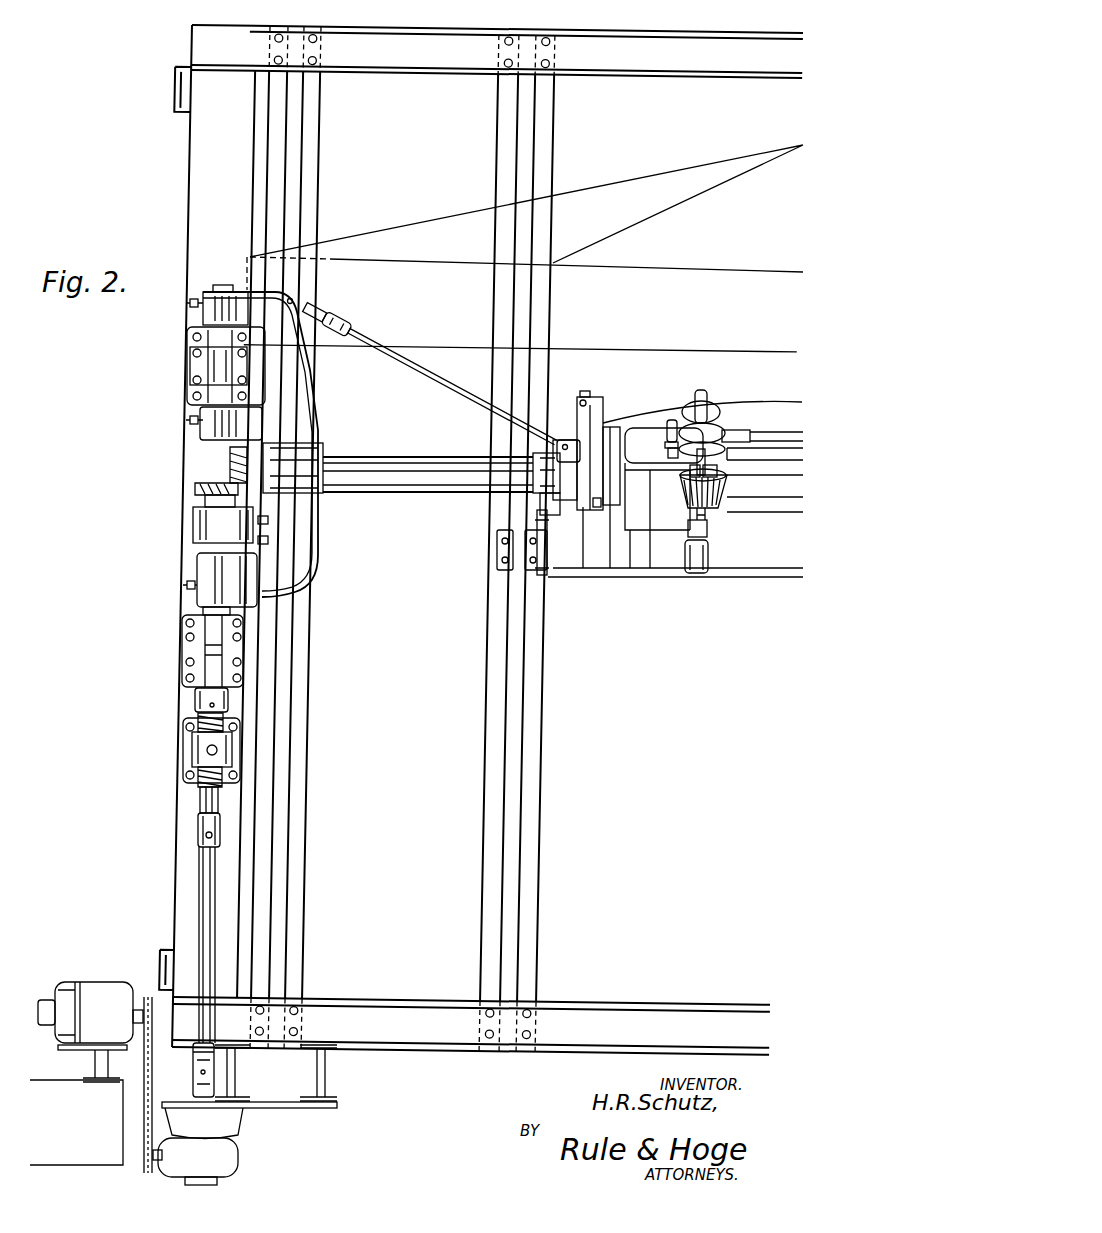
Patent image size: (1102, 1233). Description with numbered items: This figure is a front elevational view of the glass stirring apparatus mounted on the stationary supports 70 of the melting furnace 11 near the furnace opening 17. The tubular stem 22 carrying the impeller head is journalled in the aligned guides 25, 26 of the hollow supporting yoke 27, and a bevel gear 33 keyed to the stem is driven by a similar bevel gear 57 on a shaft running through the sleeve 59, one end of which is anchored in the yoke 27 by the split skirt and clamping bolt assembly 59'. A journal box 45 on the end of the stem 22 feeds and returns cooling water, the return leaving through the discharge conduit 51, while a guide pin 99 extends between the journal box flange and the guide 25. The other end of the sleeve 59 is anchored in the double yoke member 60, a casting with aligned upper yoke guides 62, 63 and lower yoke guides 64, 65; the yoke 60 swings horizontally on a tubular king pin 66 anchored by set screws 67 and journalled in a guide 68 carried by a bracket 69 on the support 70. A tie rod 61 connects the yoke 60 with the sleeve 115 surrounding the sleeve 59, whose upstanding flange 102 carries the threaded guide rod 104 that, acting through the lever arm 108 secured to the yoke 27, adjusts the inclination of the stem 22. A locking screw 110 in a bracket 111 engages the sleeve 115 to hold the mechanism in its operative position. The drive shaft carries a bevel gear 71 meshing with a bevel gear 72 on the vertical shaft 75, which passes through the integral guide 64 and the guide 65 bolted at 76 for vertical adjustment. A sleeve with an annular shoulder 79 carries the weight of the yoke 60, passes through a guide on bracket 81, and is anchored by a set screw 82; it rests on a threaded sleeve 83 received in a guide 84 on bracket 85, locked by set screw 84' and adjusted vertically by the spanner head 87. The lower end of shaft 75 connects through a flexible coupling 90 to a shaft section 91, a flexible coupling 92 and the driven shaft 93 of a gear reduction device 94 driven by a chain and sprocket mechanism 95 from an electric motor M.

The melting tank or furnace 11 is at (627, 818).
The furnace opening 17 is at (750, 575).
The tubular stem 22 is at (710, 553).
The guide 25 is at (722, 472).
The guide 26 is at (708, 528).
The hollow supporting yoke 27 is at (640, 430).
The bevel gear 33 is at (728, 486).
The journal box 45 is at (712, 418).
The discharge conduit 51 is at (742, 431).
The bevel gear 57 is at (680, 490).
The sleeve or carrier 59 is at (421, 462).
The split skirt and clamping bolt assembly 59' is at (579, 523).
The double yoke member 60 is at (305, 410).
The tie rod 61 is at (422, 368).
The upper yoke guide 62 is at (212, 287).
The upper yoke guide 63 is at (205, 435).
The lower yoke guide 64 is at (200, 562).
The lower yoke guide 65 is at (195, 519).
The king pin 66 is at (189, 330).
The set screws 67 is at (189, 303).
The guide 68 is at (222, 366).
The bracket or support 69 is at (192, 388).
The stationary supports 70 is at (190, 233).
The bevel gear 71 is at (230, 462).
The bevel gear 72 is at (195, 486).
The shaft 75 is at (200, 798).
The bolts 76 is at (268, 540).
The annular shoulder 79 is at (210, 612).
The bracket 81 is at (185, 625).
The set screw 82 is at (186, 585).
The sleeve 83 is at (196, 719).
The guide 84 is at (188, 750).
The set screw 84' is at (183, 749).
The bracket 85 is at (190, 766).
The spanner head 87 is at (200, 700).
The flexible coupling 90 is at (196, 833).
The shaft section 91 is at (198, 898).
The flexible coupling 92 is at (215, 1077).
The driven shaft 93 is at (212, 1108).
The gear reduction device 94 is at (240, 1160).
The chain and sprocket mechanism 95 is at (148, 1115).
The guide pin 99 is at (672, 420).
The upstanding flange or web 102 is at (584, 423).
The screw threaded guide rod 104 is at (584, 392).
The lever arm 108 is at (604, 398).
The supporting and locking screw 110 is at (546, 573).
The bracket 111 is at (500, 553).
The sleeve 115 is at (562, 500).
The electric motor M is at (64, 985).